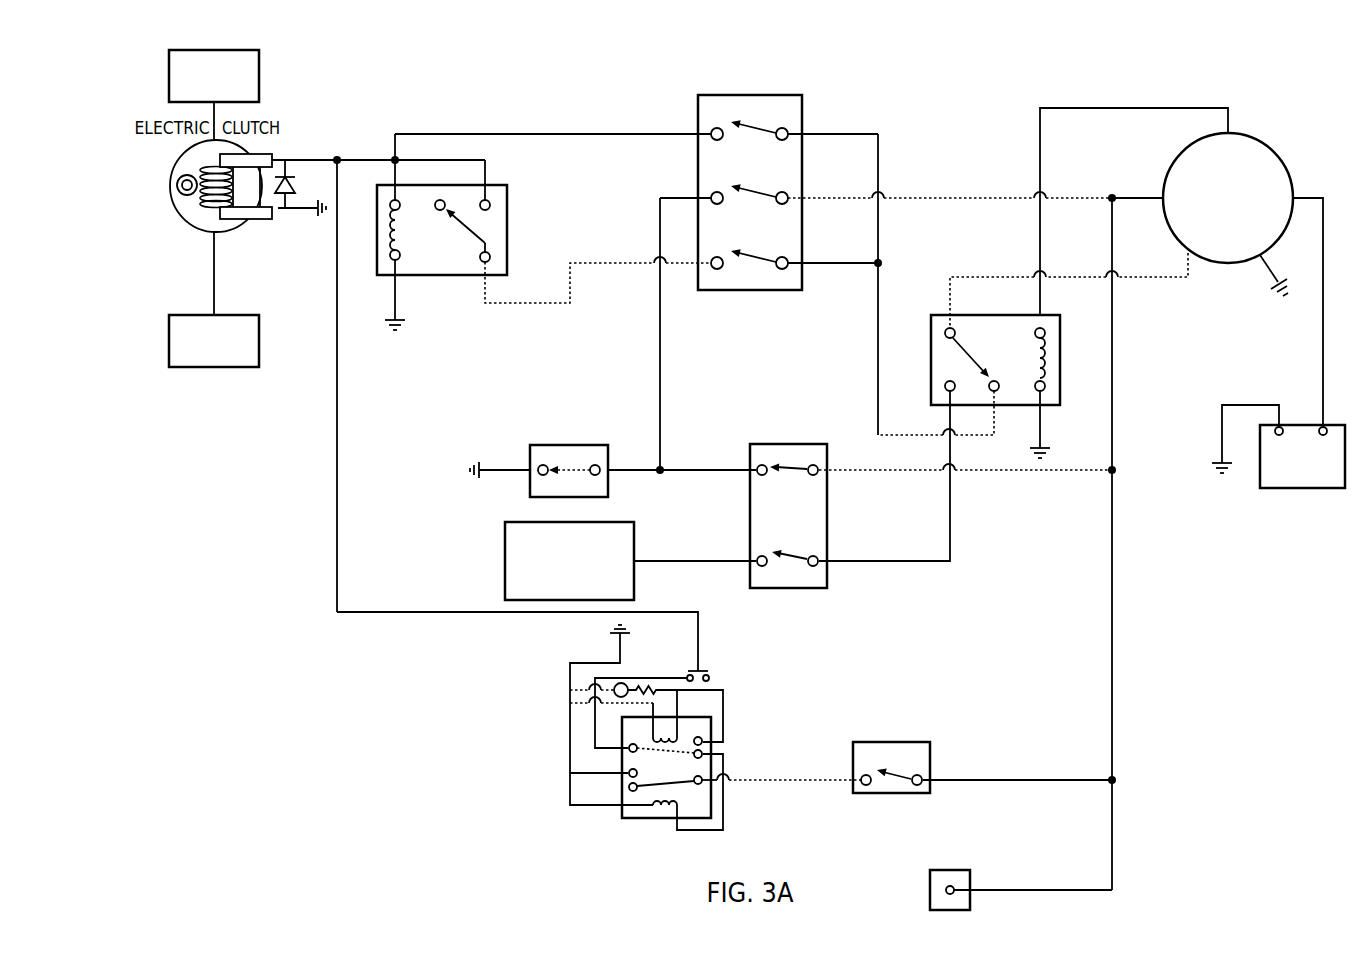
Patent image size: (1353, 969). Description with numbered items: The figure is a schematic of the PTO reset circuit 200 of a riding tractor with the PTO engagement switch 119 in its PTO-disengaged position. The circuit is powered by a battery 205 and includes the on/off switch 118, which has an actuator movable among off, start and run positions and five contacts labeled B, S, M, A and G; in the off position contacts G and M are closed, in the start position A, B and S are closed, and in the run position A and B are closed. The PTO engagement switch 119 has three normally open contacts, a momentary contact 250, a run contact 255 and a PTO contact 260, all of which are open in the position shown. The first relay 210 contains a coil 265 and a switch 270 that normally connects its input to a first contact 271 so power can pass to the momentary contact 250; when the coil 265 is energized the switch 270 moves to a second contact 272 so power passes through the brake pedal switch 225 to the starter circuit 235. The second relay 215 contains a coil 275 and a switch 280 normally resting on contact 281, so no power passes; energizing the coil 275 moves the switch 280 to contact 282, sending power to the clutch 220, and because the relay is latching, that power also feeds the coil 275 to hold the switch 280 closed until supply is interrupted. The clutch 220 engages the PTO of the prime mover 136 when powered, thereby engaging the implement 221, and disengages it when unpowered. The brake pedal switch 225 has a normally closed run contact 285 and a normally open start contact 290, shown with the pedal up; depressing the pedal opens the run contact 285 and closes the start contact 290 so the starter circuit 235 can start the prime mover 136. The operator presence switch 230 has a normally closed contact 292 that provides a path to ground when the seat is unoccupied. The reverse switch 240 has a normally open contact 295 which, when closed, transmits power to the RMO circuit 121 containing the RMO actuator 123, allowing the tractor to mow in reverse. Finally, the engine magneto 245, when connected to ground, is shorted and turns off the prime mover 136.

The PTO reset circuit 200 is at (516, 90).
The prime mover 136 is at (259, 55).
The clutch 220 is at (235, 222).
The implement 221 is at (259, 360).
The second relay 215 is at (450, 239).
The coil 275 is at (387, 232).
The contact 281 is at (426, 230).
The contact 282 is at (488, 203).
The switch 280 is at (472, 226).
The PTO engagement switch 119 is at (753, 187).
The momentary contact 250 is at (757, 131).
The run contact 255 is at (757, 195).
The PTO contact 260 is at (757, 260).
The on/off switch 118 is at (1283, 157).
The first relay 210 is at (989, 364).
The coil 265 is at (1050, 362).
The switch 270 is at (962, 358).
The first contact 271 is at (997, 386).
The second contact 272 is at (945, 388).
The battery 205 is at (1260, 468).
The operator presence switch 230 is at (565, 436).
The contact 292 is at (570, 467).
The starter circuit 235 is at (516, 522).
The brake pedal switch 225 is at (792, 482).
The run contact 285 is at (802, 466).
The start contact 290 is at (800, 556).
The RMO circuit 121 is at (556, 743).
The RMO actuator 123 is at (620, 812).
The reverse switch 240 is at (894, 759).
The contact 295 is at (898, 776).
The engine magneto 245 is at (930, 883).